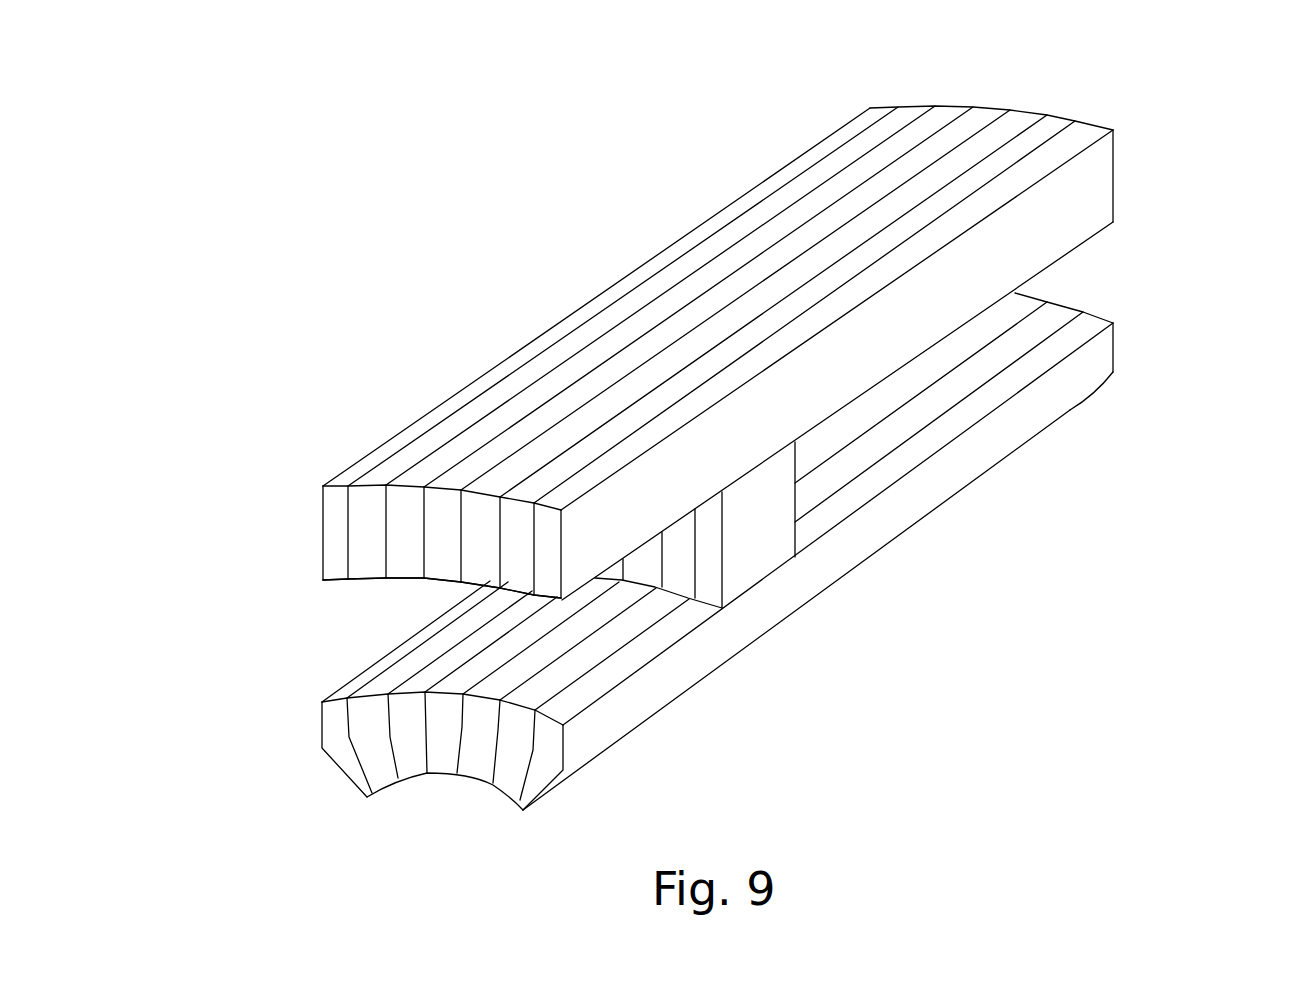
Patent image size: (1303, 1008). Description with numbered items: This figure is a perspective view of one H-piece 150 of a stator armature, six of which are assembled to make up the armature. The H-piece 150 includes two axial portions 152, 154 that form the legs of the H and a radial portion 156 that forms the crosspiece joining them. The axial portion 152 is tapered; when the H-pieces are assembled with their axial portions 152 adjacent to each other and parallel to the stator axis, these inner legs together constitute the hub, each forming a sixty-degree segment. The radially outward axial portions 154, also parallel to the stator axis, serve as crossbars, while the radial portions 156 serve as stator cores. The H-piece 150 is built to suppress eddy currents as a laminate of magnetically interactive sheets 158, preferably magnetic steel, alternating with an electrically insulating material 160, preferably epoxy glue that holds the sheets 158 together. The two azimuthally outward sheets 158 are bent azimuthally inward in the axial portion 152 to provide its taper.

The H-piece 150 is at (1157, 161).
The axial portion 152 is at (920, 524).
The axial portion 154 is at (788, 393).
The radial portion 156 is at (738, 512).
The magnetically interactive sheets 158 is at (338, 565).
The electrically insulating material 160 is at (370, 564).